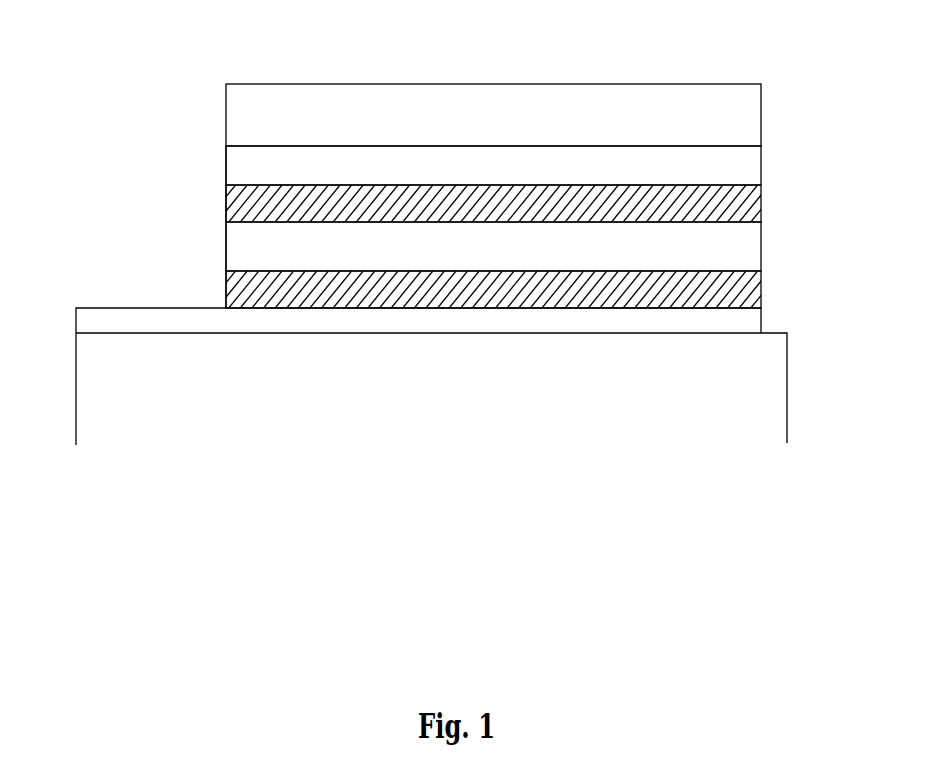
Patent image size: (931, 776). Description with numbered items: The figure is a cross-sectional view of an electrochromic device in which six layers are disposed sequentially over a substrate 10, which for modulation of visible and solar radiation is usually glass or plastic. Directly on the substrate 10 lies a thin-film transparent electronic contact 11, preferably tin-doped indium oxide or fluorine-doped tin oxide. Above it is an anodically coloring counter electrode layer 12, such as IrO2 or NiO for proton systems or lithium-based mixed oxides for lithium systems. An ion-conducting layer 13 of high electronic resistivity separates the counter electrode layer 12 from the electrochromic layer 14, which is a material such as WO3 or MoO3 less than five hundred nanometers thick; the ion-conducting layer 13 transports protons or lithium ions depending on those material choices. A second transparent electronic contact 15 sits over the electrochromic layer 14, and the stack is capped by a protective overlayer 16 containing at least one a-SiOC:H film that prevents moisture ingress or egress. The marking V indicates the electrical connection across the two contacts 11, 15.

The substrate 10 is at (431, 376).
The transparent electronic contact 11 is at (742, 318).
The counter electrode layer 12 is at (748, 292).
The ion-conducting layer 13 is at (748, 252).
The electrochromic layer 14 is at (758, 205).
The transparent electronic contact 15 is at (730, 165).
The protective overlayer 16 is at (693, 108).
The voltage applied across layers V is at (240, 172).